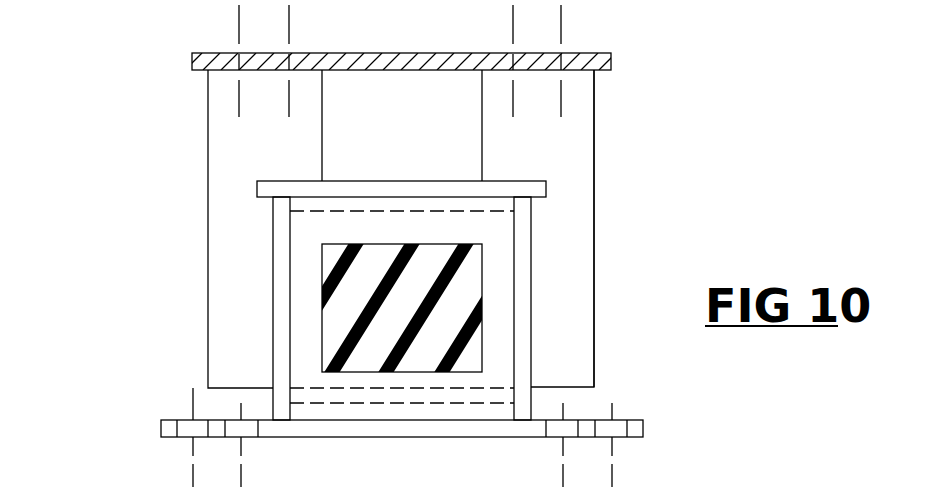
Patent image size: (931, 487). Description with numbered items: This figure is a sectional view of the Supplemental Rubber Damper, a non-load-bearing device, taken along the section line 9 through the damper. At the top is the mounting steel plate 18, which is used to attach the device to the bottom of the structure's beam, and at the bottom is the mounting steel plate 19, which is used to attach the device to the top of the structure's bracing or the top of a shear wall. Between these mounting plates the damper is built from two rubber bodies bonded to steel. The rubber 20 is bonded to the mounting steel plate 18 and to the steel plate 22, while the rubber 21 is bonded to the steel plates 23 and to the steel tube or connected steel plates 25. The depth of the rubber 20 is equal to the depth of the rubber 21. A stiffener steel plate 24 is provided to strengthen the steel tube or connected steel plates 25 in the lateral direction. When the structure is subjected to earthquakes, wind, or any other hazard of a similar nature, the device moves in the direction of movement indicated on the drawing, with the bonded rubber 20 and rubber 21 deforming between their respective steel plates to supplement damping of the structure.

The section line 9 is at (352, 20).
The mounting steel plate 18 is at (192, 70).
The mounting steel plate 19 is at (268, 438).
The rubber 20 is at (482, 117).
The rubber 21 is at (482, 275).
The steel plate 22 is at (455, 197).
The steel plates 23 is at (594, 201).
The stiffener steel plate 24 is at (265, 318).
The steel tube or connected steel plates 25 is at (305, 231).